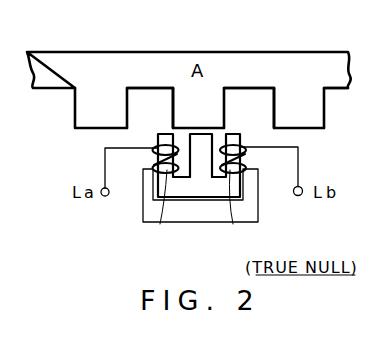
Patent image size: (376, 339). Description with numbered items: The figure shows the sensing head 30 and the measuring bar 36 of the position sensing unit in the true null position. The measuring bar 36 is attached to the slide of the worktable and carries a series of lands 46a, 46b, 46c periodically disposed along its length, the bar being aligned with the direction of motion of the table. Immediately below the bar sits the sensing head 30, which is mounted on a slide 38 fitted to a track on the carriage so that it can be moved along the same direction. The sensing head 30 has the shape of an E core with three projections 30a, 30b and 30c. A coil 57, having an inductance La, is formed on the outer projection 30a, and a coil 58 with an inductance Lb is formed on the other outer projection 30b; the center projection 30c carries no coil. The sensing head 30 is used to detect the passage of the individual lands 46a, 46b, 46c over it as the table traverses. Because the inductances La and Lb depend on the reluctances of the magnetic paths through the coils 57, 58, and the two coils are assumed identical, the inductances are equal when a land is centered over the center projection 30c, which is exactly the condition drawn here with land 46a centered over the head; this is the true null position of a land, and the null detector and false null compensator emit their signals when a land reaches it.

The measuring bar 36 is at (275, 63).
The land 46a is at (310, 109).
The land 46b is at (211, 121).
The land 46c is at (114, 119).
The sensing head 30 is at (158, 184).
The projection 30a is at (156, 155).
The projection 30b is at (234, 168).
The projection 30c is at (197, 150).
The slide 38 is at (201, 207).
The coil 57 is at (160, 206).
The coil 58 is at (242, 206).